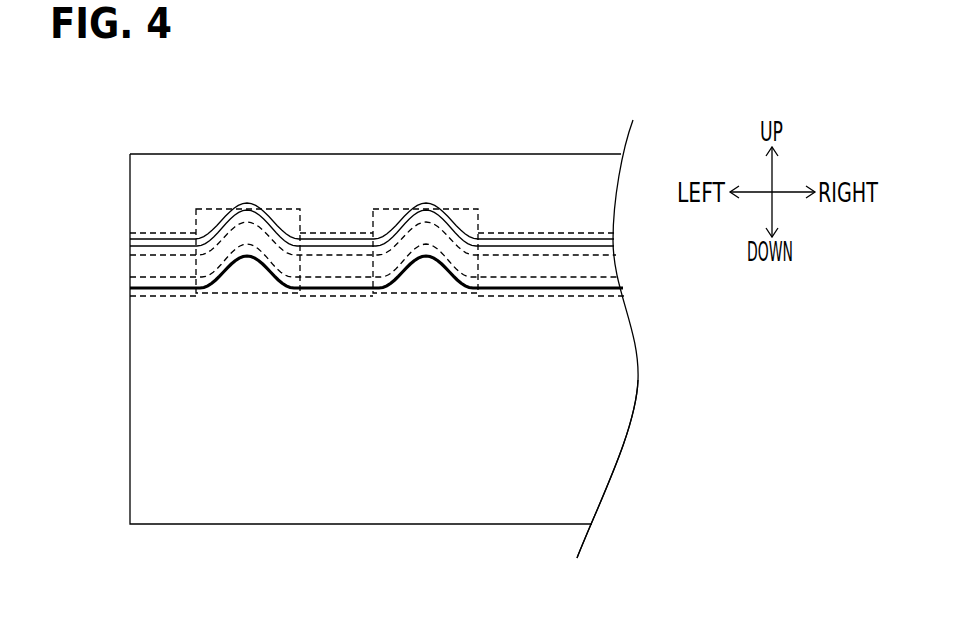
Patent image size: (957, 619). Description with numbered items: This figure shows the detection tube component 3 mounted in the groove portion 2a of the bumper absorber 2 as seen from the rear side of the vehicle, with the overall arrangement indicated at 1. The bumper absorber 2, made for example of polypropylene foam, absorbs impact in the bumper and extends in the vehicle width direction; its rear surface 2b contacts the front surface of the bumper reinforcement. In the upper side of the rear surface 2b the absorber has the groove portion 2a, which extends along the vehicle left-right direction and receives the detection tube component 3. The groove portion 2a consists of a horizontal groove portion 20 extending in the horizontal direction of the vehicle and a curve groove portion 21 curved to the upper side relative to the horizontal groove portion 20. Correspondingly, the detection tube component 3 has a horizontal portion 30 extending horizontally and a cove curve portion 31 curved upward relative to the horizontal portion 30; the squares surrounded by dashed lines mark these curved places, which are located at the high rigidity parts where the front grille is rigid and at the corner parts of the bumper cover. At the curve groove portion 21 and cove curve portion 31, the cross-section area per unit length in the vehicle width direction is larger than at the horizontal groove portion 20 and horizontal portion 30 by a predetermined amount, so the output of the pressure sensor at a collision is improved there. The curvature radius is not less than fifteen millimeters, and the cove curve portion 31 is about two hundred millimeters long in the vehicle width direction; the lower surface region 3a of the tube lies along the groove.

The semiconductor device 1 is at (667, 132).
The bumper absorber 2 is at (349, 525).
The groove portion 2a is at (604, 288).
The rear surface 2b is at (593, 472).
The detection tube component 3 is at (576, 237).
The lower layer of film 3a is at (498, 263).
The horizontal groove portion 20 is at (167, 237).
The curve groove portion 21 is at (247, 203).
The horizontal portion 30 is at (166, 298).
The cove curve portion 31 is at (282, 209).